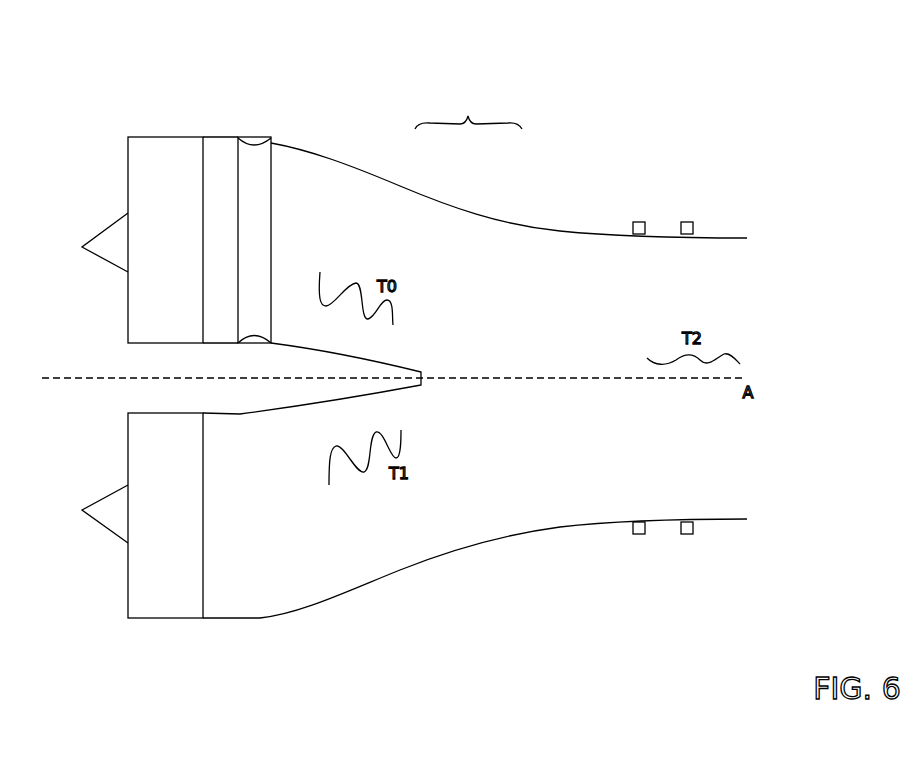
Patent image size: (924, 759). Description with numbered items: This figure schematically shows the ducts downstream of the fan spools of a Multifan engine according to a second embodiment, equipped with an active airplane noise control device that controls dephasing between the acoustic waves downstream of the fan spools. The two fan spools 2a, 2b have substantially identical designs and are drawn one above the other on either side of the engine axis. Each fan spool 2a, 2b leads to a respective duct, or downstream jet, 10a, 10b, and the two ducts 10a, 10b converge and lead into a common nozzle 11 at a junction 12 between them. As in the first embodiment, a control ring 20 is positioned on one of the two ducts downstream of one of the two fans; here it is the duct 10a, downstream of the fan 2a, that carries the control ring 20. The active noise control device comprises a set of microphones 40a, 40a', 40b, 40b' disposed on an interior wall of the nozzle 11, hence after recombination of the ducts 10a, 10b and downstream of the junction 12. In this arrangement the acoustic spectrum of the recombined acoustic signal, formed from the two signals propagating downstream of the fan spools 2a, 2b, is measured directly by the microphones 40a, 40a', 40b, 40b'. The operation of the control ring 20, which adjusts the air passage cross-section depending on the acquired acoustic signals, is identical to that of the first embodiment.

The fan spool 2a is at (138, 137).
The fan spool 2b is at (138, 618).
The control ring 20 is at (257, 152).
The duct 10a is at (323, 238).
The duct 10b is at (324, 518).
The common nozzle 11 is at (591, 280).
The junction 12 is at (468, 111).
The microphone 40a is at (649, 182).
The microphone 40a' is at (705, 185).
The microphone 40b is at (652, 574).
The microphone 40b' is at (706, 572).